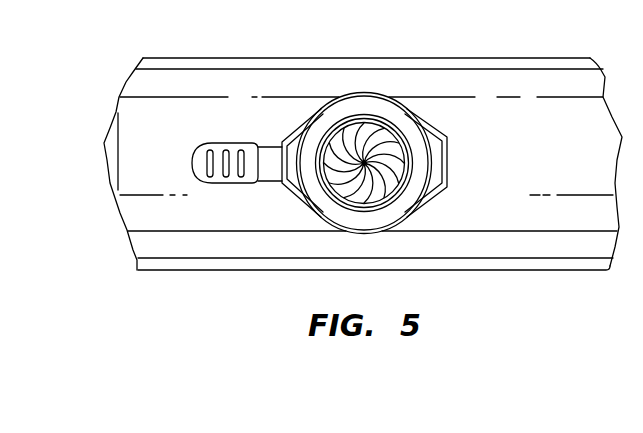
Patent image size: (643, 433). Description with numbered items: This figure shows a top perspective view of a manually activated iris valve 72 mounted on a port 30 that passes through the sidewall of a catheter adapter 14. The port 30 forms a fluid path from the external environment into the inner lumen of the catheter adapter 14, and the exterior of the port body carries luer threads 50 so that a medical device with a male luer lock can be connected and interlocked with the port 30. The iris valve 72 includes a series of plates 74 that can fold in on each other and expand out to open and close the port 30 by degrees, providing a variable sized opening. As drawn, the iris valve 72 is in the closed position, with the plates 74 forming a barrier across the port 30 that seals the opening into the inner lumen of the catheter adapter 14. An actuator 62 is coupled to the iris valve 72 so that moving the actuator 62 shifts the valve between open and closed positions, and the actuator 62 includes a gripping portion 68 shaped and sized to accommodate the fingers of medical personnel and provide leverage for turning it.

The catheter adapter 14 is at (543, 245).
The port 30 is at (281, 126).
The luer threads 50 is at (450, 155).
The actuator 62 is at (268, 181).
The gripping portion 68 is at (197, 152).
The iris valve 72 is at (335, 135).
The series of plates 74 is at (373, 133).